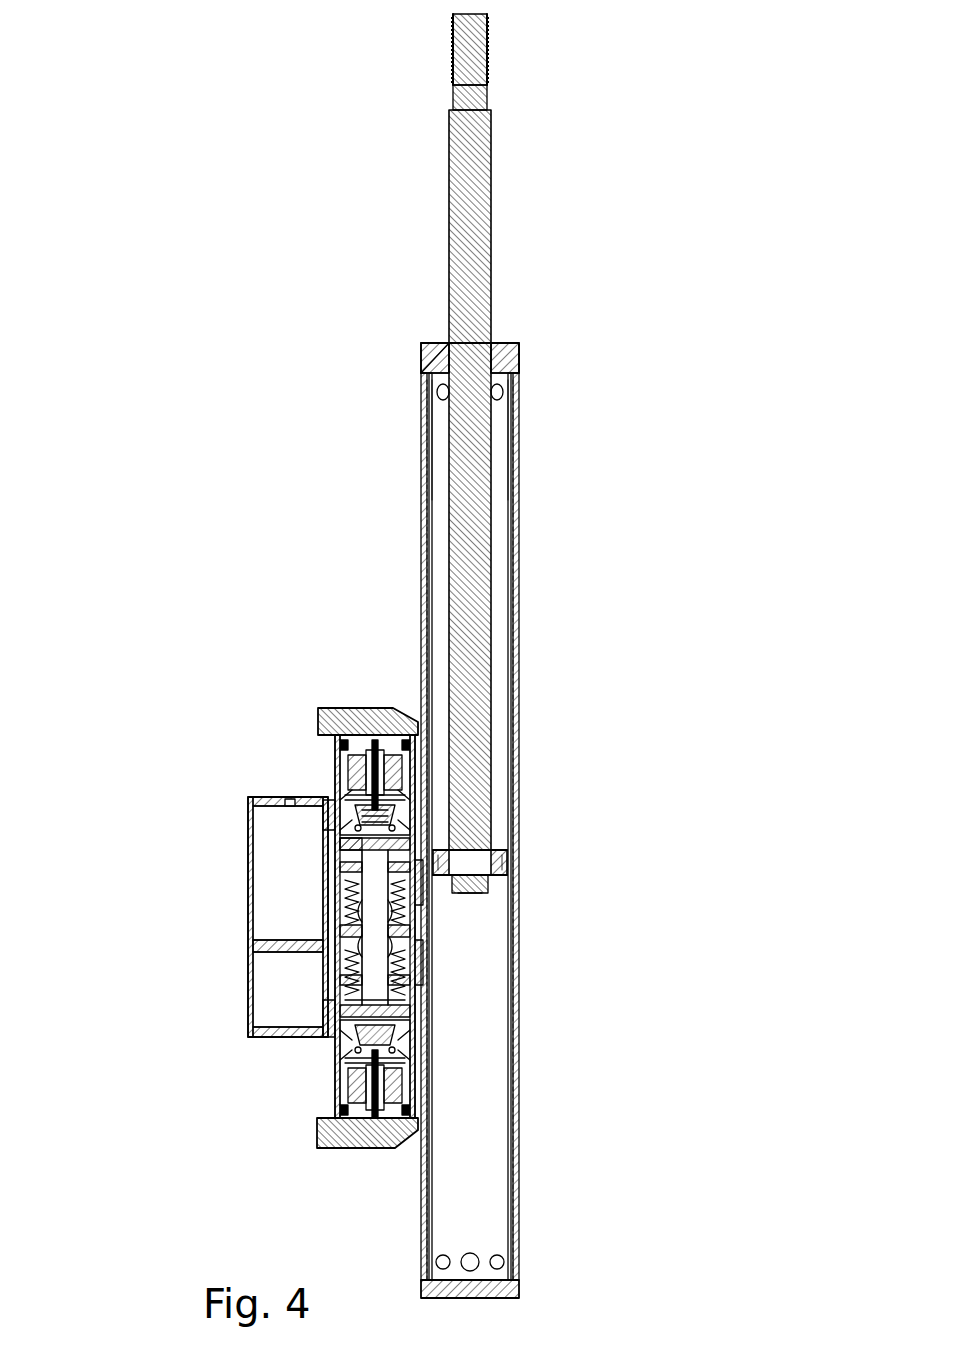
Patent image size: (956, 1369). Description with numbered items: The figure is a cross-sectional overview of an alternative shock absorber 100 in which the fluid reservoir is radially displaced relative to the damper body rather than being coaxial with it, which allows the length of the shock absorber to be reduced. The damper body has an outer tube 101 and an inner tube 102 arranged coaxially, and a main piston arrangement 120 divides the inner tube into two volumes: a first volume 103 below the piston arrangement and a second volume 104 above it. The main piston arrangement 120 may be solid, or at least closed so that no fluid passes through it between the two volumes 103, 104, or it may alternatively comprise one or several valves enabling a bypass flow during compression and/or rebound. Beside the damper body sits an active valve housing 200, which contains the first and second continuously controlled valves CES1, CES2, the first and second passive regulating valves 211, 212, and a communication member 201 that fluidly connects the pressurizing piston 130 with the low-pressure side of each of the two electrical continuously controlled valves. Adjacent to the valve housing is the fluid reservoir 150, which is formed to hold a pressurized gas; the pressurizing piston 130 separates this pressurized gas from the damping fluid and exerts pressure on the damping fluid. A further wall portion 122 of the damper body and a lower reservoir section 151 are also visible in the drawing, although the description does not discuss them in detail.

The shock absorber 100 is at (298, 580).
The outer tube 101 is at (517, 754).
The inner tube 102 is at (425, 690).
The first volume 103 is at (482, 928).
The second volume 104 is at (500, 823).
The main piston arrangement 120 is at (515, 868).
The inner tube 122 is at (440, 654).
The pressurizing piston 130 is at (272, 931).
The fluid reservoir 150 is at (275, 885).
The second reservoir chamber 151 is at (272, 972).
The active valve housing 200 is at (297, 1142).
The communication member 201 is at (345, 870).
The first passive regulating valve 211 is at (335, 853).
The second passive regulating valve 212 is at (335, 1010).
The first continuously controlled valve CES1 is at (335, 782).
The second continuously controlled valve CES2 is at (335, 1052).